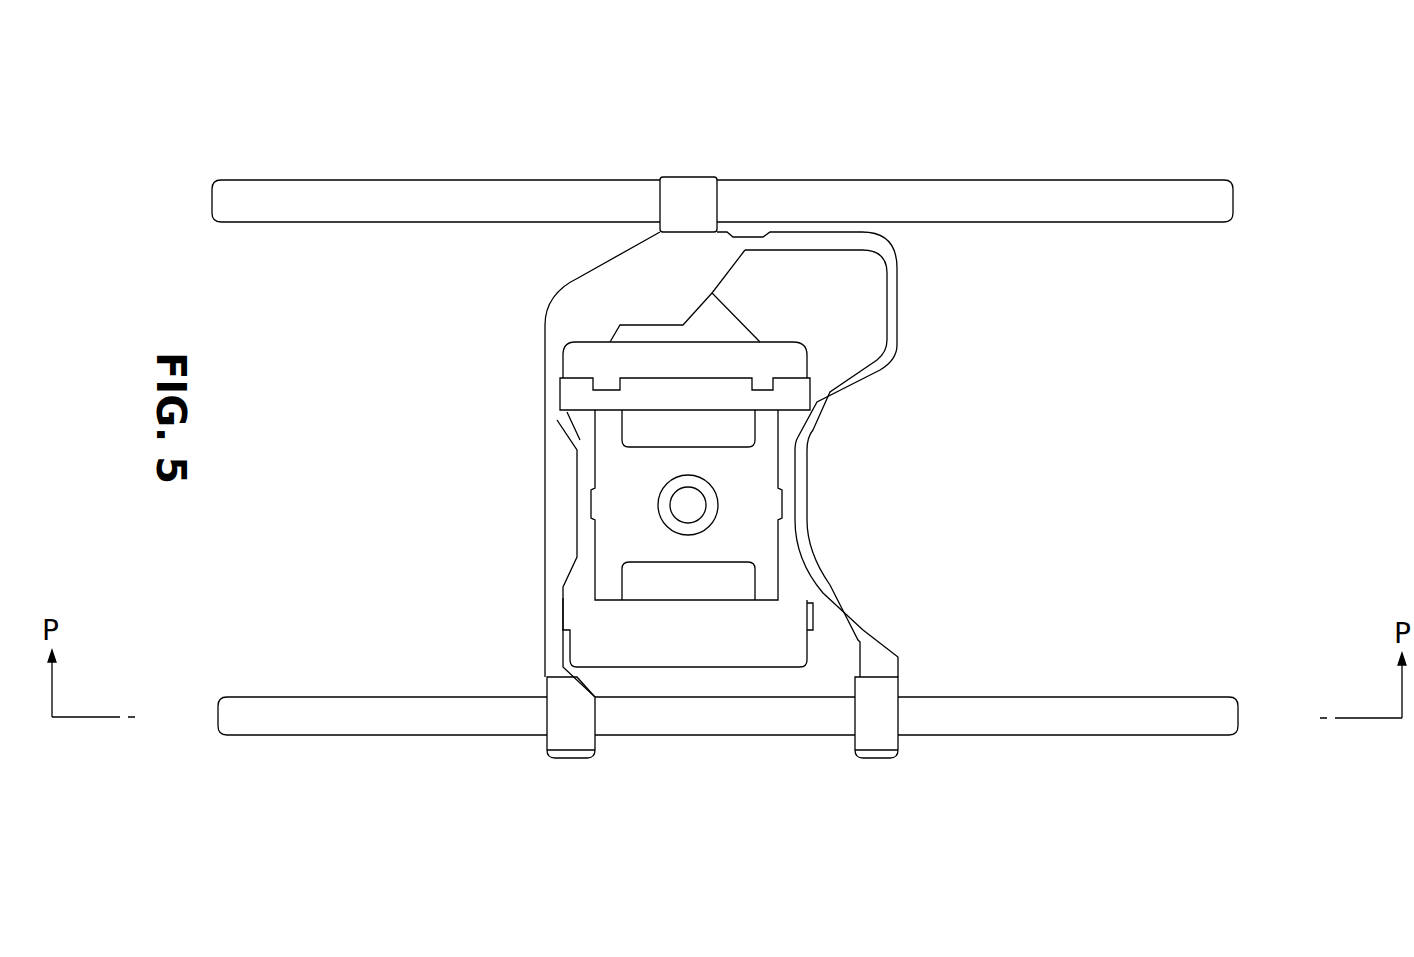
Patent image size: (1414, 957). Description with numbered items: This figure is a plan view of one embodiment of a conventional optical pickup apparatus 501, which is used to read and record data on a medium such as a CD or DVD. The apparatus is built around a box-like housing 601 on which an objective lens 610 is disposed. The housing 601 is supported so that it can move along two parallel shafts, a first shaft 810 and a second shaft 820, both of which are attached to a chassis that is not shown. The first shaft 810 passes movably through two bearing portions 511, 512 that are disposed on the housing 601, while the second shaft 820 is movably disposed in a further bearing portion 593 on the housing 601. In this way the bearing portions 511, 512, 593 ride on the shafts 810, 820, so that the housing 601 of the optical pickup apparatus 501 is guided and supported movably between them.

The optical pickup apparatus 501 is at (1092, 472).
The bearing portion 511 is at (880, 758).
The bearing portion 512 is at (565, 760).
The bearing portion 593 is at (693, 177).
The housing 601 is at (540, 485).
The objective lens 610 is at (690, 502).
The first shaft 810 is at (1072, 735).
The second shaft 820 is at (1050, 180).